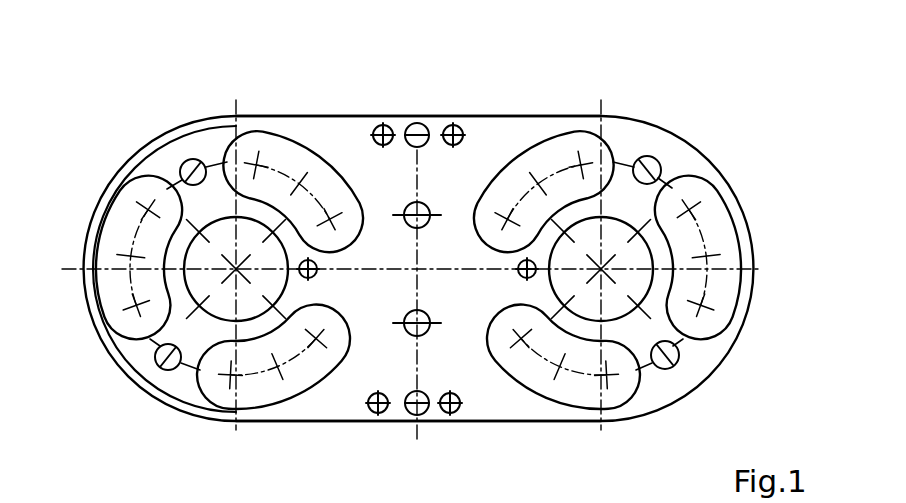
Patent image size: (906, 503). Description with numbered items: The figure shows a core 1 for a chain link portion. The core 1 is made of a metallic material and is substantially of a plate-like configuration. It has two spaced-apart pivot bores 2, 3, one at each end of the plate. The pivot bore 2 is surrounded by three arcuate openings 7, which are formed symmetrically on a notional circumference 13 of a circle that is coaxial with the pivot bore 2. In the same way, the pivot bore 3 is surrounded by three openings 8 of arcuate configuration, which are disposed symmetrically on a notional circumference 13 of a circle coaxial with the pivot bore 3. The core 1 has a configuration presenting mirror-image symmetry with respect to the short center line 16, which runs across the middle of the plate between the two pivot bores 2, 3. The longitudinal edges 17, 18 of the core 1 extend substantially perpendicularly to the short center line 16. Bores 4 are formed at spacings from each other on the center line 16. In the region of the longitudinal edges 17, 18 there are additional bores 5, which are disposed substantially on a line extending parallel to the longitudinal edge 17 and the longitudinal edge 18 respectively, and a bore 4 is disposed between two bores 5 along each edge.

The core 1 is at (500, 122).
The pivot bore 2 is at (640, 232).
The pivot bore 3 is at (220, 308).
The bore 4 is at (433, 372).
The additional bore 5 is at (378, 117).
The arcuate opening 7 is at (570, 147).
The opening 8 is at (278, 155).
The notional circumference 13 is at (150, 340).
The short center line 16 is at (418, 123).
The longitudinal edge 17 is at (548, 112).
The longitudinal edge 18 is at (493, 423).